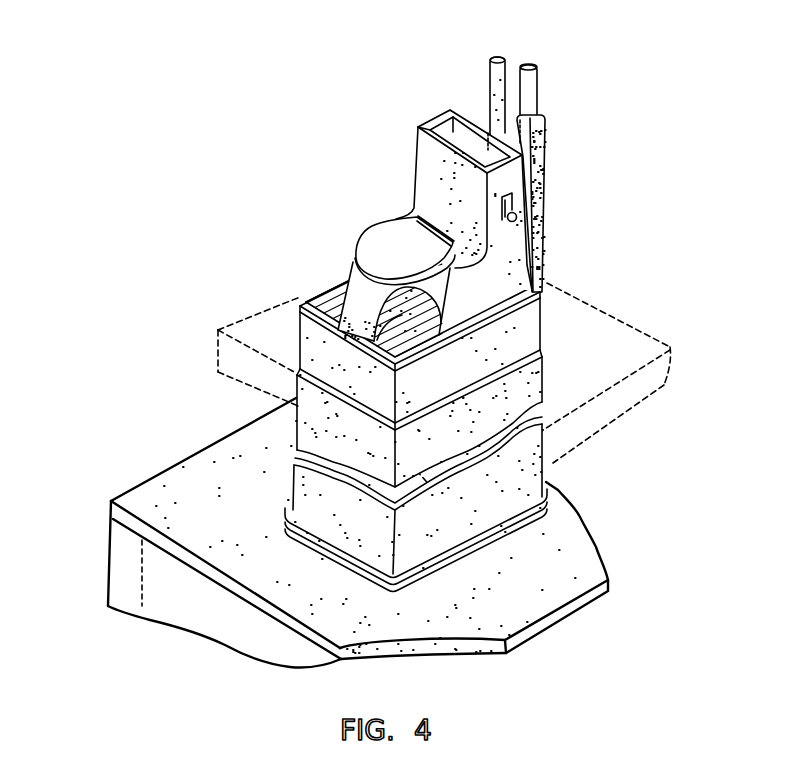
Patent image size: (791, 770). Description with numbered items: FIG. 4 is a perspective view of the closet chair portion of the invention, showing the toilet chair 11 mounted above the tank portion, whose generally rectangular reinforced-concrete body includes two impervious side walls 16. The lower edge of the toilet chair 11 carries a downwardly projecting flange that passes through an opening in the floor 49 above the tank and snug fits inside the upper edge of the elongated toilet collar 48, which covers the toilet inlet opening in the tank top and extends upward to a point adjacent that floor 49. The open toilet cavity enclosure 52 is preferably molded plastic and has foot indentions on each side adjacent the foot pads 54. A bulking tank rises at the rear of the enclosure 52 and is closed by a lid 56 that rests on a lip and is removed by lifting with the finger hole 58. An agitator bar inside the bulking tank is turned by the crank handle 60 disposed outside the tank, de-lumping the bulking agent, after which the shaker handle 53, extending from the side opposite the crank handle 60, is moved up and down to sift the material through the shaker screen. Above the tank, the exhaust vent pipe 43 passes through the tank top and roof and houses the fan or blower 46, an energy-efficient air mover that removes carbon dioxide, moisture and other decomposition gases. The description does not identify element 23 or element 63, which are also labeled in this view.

The toilet chair 11 is at (441, 149).
The impervious side walls 16 is at (117, 544).
The conduit rod 23 is at (523, 104).
The exhaust vent pipe 43 is at (503, 58).
The fan or blower 46 is at (510, 80).
The toilet collar 48 is at (493, 345).
The floor 49 is at (663, 385).
The toilet cavity enclosure 52 is at (515, 278).
The shaker handle 53 is at (375, 340).
The foot pads 54 is at (437, 332).
The lid 56 is at (468, 127).
The finger hole 58 is at (440, 115).
The crank handle 60 is at (430, 114).
The latch 63 is at (552, 191).